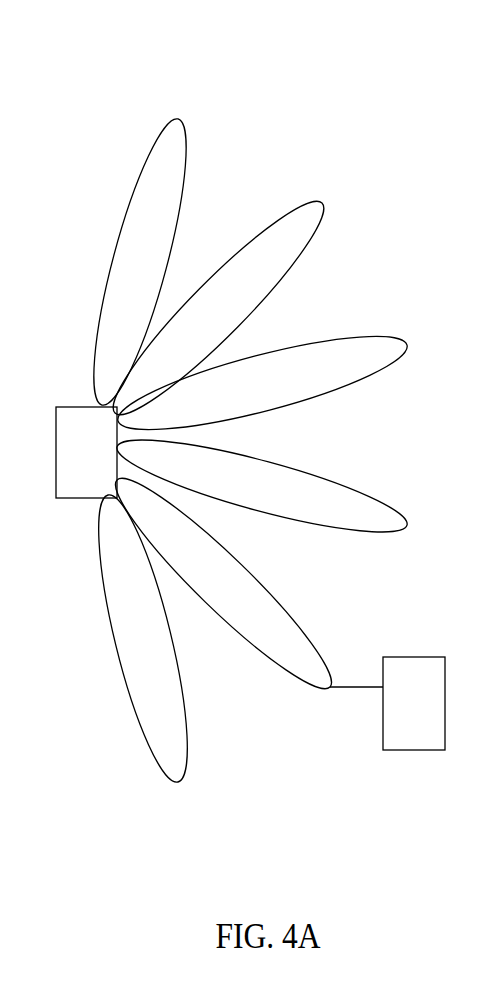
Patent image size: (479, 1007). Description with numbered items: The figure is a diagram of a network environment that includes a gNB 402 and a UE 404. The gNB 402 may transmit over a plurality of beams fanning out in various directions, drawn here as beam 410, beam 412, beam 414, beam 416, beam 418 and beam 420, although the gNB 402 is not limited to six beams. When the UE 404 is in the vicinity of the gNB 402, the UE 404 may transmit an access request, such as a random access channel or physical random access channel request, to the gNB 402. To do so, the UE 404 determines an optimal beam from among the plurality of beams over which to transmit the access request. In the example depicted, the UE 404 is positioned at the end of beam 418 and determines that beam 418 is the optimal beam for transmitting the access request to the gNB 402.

The gNB 402 is at (86, 452).
The UE 404 is at (387, 703).
The beam 410 is at (172, 117).
The beam 412 is at (312, 198).
The beam 414 is at (385, 340).
The beam 416 is at (375, 500).
The beam 418 is at (283, 672).
The beam 420 is at (177, 788).